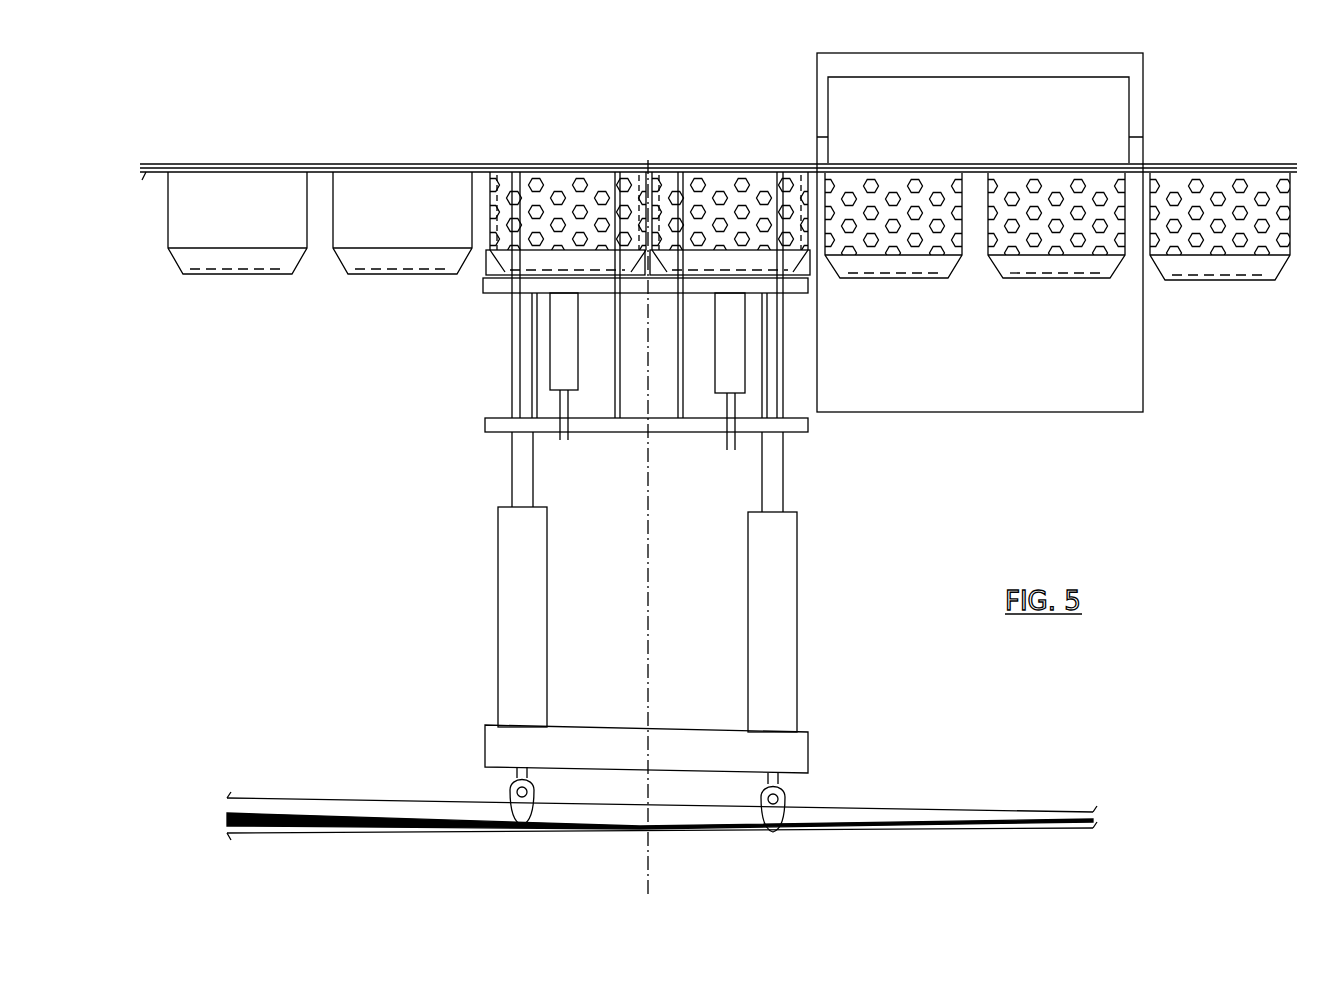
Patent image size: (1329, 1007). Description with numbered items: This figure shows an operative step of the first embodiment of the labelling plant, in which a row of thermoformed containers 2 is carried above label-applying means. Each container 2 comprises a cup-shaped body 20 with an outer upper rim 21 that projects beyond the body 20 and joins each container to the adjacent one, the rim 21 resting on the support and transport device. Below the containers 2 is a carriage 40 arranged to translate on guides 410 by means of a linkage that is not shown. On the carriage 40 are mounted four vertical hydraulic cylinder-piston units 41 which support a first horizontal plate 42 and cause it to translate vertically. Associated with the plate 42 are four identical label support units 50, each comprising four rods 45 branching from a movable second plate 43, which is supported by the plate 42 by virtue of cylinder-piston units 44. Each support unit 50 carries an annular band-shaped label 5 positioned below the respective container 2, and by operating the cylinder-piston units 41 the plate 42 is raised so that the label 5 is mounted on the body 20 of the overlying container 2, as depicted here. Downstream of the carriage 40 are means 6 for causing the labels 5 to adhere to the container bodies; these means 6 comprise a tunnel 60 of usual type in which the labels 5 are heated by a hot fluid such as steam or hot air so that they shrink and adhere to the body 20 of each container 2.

The container 2 is at (1062, 332).
The annular band-shaped label 5 is at (889, 240).
The means for causing the labels to adhere 6 is at (1000, 221).
The cup-shaped body 20 is at (250, 222).
The outer upper rim 21 is at (322, 165).
The carriage 40 is at (805, 740).
The vertical hydraulic cylinder-piston unit 41 is at (497, 650).
The first horizontal plate 42 is at (492, 283).
The movable second plate 43 is at (497, 425).
The cylinder-piston unit 44 is at (555, 368).
The rod 45 is at (512, 335).
The label support unit 50 is at (790, 338).
The tunnel 60 is at (818, 111).
The guide 410 is at (815, 826).